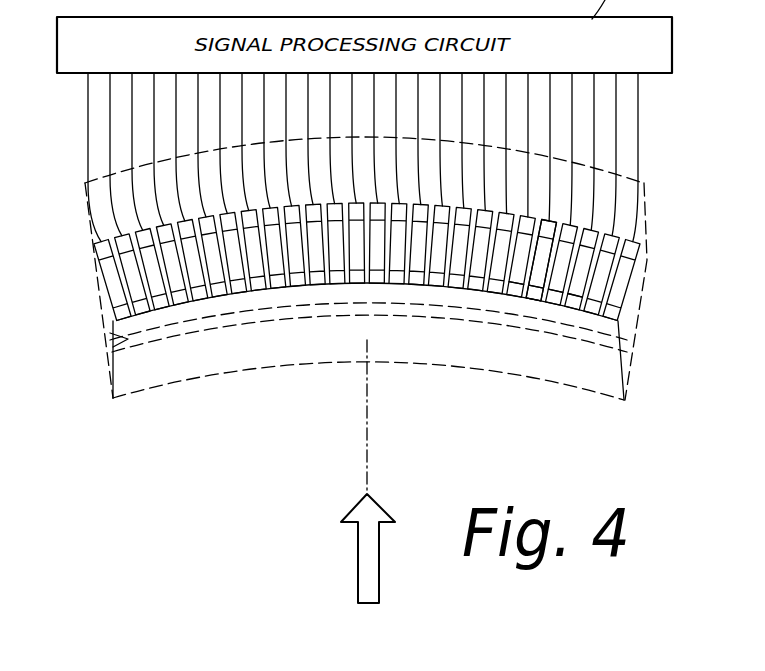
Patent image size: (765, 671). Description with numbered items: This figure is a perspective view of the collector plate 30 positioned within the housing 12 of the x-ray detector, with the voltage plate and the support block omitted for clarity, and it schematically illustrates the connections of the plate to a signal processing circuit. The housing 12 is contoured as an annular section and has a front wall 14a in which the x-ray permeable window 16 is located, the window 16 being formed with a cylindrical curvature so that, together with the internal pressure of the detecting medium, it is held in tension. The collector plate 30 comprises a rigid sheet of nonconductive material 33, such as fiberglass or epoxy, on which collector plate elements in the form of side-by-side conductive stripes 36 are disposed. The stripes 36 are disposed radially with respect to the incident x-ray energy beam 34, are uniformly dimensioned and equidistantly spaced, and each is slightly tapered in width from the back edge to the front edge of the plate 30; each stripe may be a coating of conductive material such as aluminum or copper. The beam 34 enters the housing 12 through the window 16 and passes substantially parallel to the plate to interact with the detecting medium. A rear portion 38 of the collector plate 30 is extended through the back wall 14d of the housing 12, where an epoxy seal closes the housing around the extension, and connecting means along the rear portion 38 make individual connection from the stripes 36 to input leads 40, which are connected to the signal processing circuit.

The housing 12 is at (100, 358).
The front wall 14a is at (437, 357).
The back wall 14d is at (580, 163).
The x-ray permeable window 16 is at (118, 338).
The collector plate 30 is at (296, 284).
The sheet of nonconductive material 33 is at (615, 279).
The incident x-ray energy beam 34 is at (358, 558).
The conductive stripes 36 is at (565, 310).
The rear portion 38 is at (545, 213).
The input leads 40 is at (154, 124).